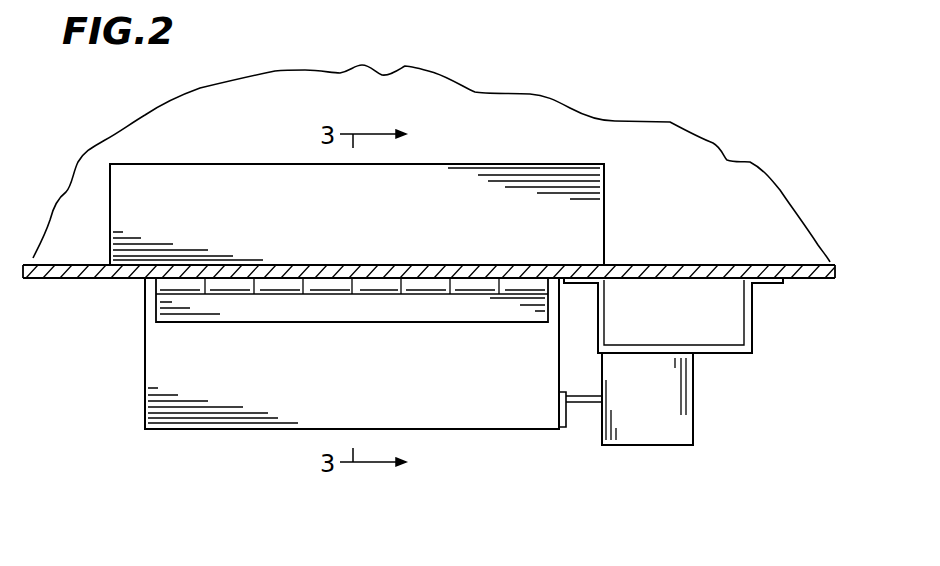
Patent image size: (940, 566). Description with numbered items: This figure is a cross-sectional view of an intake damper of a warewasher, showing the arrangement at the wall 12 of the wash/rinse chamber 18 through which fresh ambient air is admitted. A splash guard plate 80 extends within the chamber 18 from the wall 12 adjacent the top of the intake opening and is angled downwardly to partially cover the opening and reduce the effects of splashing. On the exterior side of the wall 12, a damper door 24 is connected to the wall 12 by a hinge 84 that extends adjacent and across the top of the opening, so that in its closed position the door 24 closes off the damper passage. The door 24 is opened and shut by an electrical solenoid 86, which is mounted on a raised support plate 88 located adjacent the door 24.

The wall 12 is at (672, 263).
The chamber 18 is at (550, 97).
The damper door 24 is at (212, 425).
The splash guard plate 80 is at (276, 214).
The hinge 84 is at (328, 287).
The electrical solenoid 86 is at (655, 435).
The raised support plate 88 is at (725, 355).